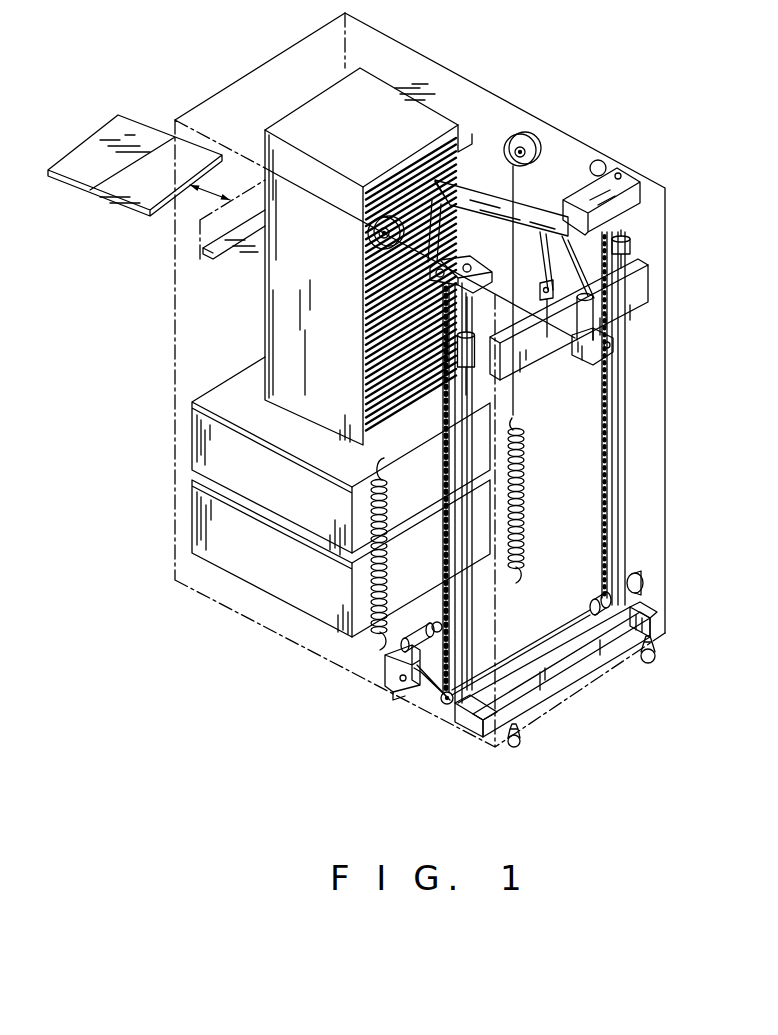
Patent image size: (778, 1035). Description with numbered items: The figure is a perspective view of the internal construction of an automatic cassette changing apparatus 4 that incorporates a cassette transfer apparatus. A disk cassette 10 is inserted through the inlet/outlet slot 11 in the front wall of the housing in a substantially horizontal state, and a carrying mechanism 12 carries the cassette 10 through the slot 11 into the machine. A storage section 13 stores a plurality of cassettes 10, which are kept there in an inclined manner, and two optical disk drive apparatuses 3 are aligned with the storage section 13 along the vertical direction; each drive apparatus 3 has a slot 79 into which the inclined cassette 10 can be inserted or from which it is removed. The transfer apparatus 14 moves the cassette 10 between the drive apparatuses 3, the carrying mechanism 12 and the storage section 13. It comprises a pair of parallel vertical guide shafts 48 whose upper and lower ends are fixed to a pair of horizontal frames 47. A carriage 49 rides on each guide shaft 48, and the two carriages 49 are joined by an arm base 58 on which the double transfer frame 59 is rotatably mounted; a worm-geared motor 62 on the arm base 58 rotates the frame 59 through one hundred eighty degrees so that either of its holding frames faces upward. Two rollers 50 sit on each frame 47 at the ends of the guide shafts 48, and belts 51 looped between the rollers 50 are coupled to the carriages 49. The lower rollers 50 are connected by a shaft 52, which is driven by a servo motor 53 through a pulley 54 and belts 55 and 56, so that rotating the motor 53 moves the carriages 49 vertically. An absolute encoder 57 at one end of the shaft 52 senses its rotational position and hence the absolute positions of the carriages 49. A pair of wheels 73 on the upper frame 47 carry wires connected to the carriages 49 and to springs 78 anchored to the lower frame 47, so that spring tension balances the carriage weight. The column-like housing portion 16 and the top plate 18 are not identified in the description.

The optical disk drive apparatus 3 is at (193, 497).
The automatic cassette changing apparatus 4 is at (392, 38).
The disk cassette 10 is at (80, 150).
The inlet/outlet slot 11 is at (200, 237).
The carrying mechanism 12 is at (243, 272).
The storage section 13 is at (398, 77).
The transfer apparatus 14 is at (652, 285).
The column housing 16 is at (267, 342).
The top plate 18 is at (468, 133).
The horizontal frame 47 is at (628, 177).
The guide shaft 48 is at (627, 503).
The carriage 49 is at (488, 376).
The roller 50 is at (470, 262).
The belt 51 is at (603, 492).
The shaft 52 is at (553, 643).
The servo motor 53 is at (417, 636).
The pulley 54 is at (397, 667).
The belt 55 is at (400, 690).
The belt 56 is at (433, 697).
The absolute encoder 57 is at (645, 585).
The arm base 58 is at (637, 305).
The double transfer frame 59 is at (483, 197).
The worm-geared motor 62 is at (586, 350).
The wheel 73 is at (382, 217).
The spring 78 is at (525, 455).
The slot 79 is at (418, 478).